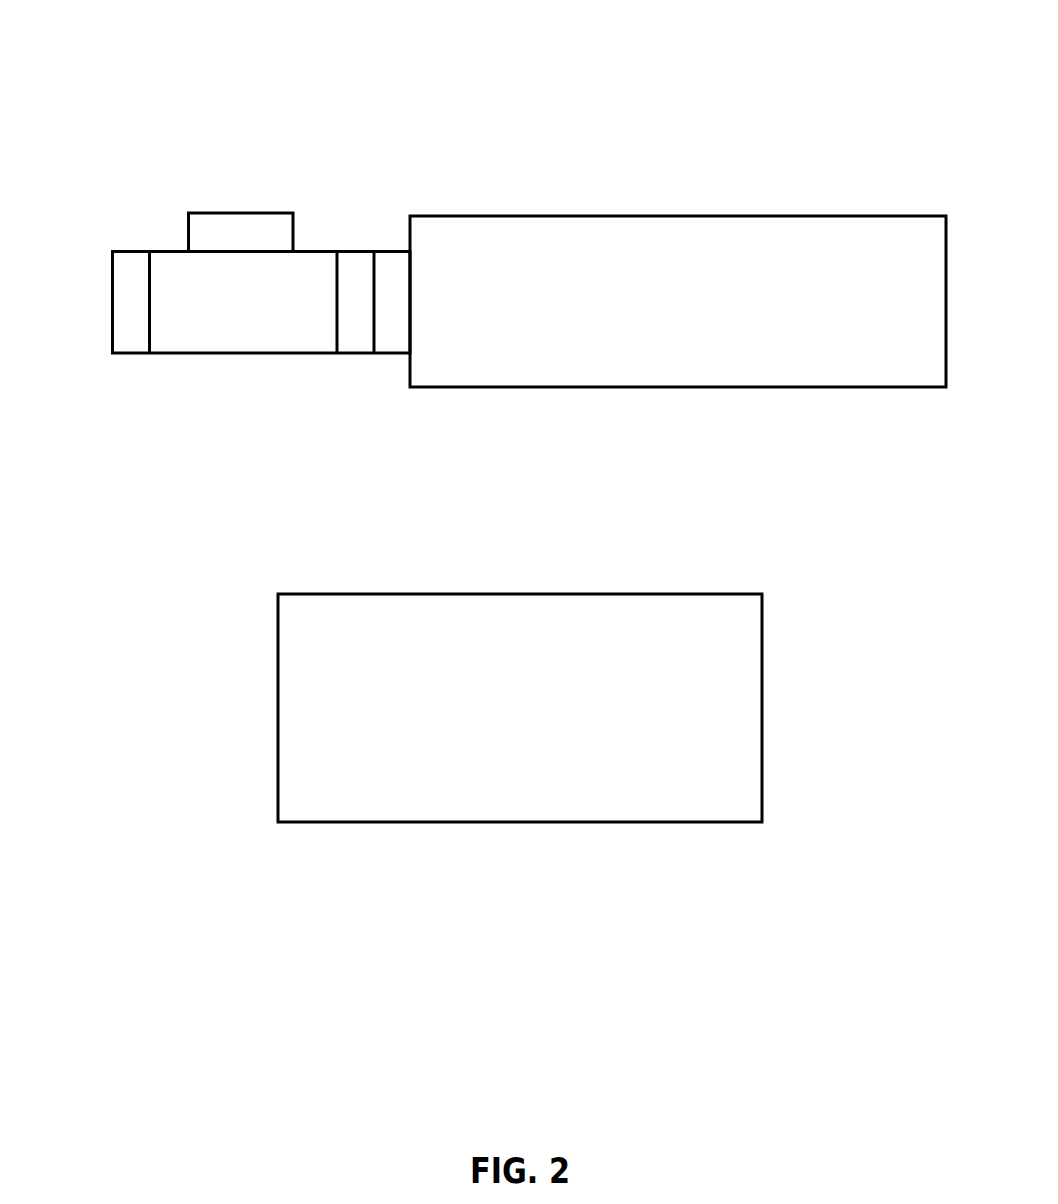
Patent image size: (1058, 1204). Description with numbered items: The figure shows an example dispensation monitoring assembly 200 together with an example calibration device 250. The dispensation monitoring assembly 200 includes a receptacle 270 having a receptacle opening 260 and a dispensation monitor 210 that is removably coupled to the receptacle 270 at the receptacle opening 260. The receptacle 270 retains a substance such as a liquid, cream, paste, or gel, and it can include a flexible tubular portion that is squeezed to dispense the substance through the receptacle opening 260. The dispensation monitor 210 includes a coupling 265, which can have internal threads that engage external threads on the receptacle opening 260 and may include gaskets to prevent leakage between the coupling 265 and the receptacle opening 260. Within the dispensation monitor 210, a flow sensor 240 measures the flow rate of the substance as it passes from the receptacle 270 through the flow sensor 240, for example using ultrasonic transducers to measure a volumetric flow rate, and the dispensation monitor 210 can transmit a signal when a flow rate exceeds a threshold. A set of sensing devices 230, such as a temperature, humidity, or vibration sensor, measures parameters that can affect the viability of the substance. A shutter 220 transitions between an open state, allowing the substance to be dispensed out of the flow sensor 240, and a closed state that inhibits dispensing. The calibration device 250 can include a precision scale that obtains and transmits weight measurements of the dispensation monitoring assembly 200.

The dispensation monitoring assembly 200 is at (427, 49).
The dispensation monitor 210 is at (147, 183).
The shutter 220 is at (132, 353).
The set of sensing devices 230 is at (241, 213).
The flow sensor 240 is at (224, 328).
The calibration device 250 is at (500, 734).
The receptacle opening 260 is at (393, 251).
The coupling 265 is at (355, 353).
The receptacle 270 is at (657, 328).